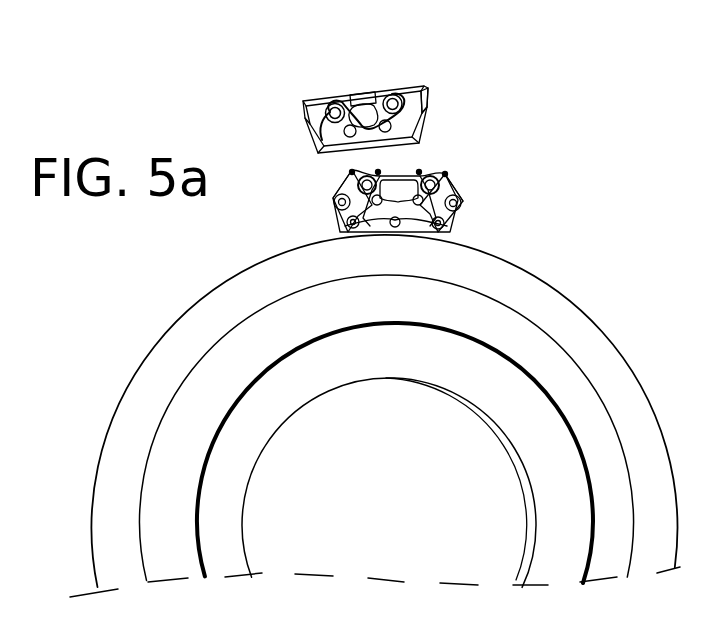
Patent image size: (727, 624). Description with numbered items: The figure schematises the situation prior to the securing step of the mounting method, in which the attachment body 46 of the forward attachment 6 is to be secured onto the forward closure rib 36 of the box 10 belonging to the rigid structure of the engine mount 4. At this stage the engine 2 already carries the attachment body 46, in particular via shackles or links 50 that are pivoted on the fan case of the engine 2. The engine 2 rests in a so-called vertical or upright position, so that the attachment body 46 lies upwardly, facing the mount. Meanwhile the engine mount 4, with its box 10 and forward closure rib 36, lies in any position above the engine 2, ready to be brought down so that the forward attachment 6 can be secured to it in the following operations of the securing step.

The engine 2 is at (580, 302).
The engine mount 4 is at (352, 90).
The forward attachment 6 is at (400, 194).
The box 10 is at (397, 84).
The forward closure rib 36 is at (372, 110).
The attachment body 46 is at (458, 180).
The shackles/links 50 is at (345, 233).